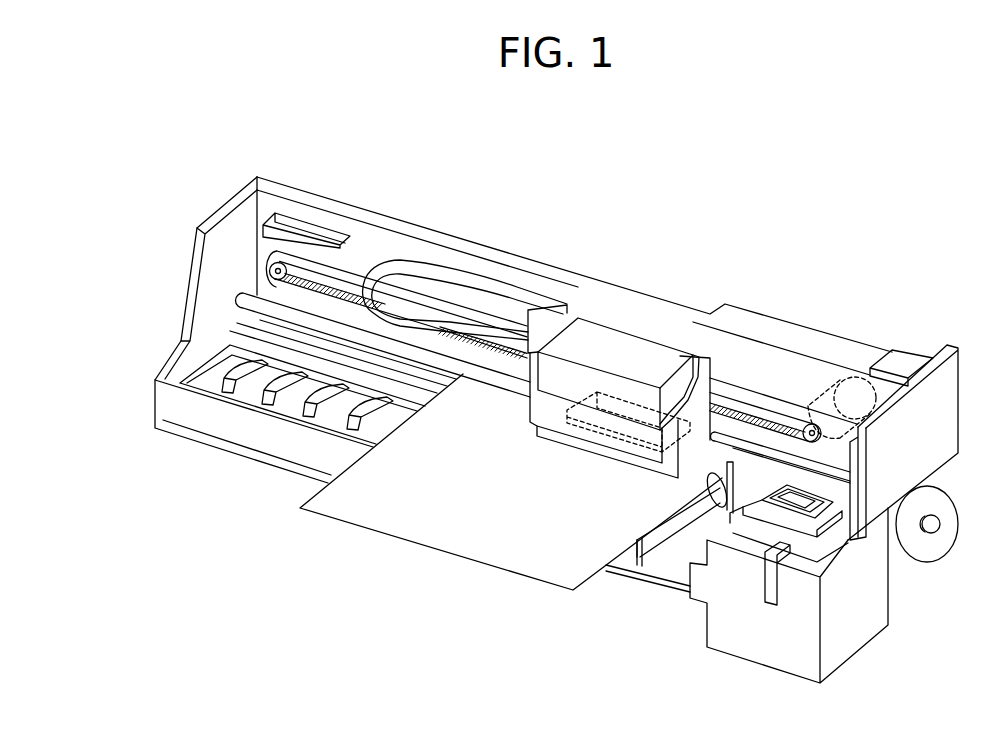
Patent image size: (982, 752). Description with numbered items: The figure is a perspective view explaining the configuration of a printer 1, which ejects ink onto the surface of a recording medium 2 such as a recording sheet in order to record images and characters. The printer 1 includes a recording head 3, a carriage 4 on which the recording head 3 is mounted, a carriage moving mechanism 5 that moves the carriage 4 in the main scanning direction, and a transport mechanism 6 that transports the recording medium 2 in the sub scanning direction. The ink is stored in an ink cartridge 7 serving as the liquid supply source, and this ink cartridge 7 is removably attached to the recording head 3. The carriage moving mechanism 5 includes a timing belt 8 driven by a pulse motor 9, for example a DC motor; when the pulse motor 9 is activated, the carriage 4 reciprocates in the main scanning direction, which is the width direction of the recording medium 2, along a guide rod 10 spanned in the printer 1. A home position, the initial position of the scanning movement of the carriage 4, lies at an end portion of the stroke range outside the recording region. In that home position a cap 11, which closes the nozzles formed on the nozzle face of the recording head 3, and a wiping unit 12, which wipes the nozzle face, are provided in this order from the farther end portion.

The printer 1 is at (571, 206).
The recording medium 2 is at (430, 515).
The recording head 3 is at (583, 430).
The carriage 4 is at (703, 387).
The carriage moving mechanism 5 is at (803, 408).
The transport mechanism 6 is at (233, 333).
The ink cartridge 7 is at (633, 357).
The timing belt 8 is at (347, 273).
The pulse motor 9 is at (840, 380).
The guide rod 10 is at (757, 447).
The cap 11 is at (760, 505).
The wiping unit 12 is at (727, 505).